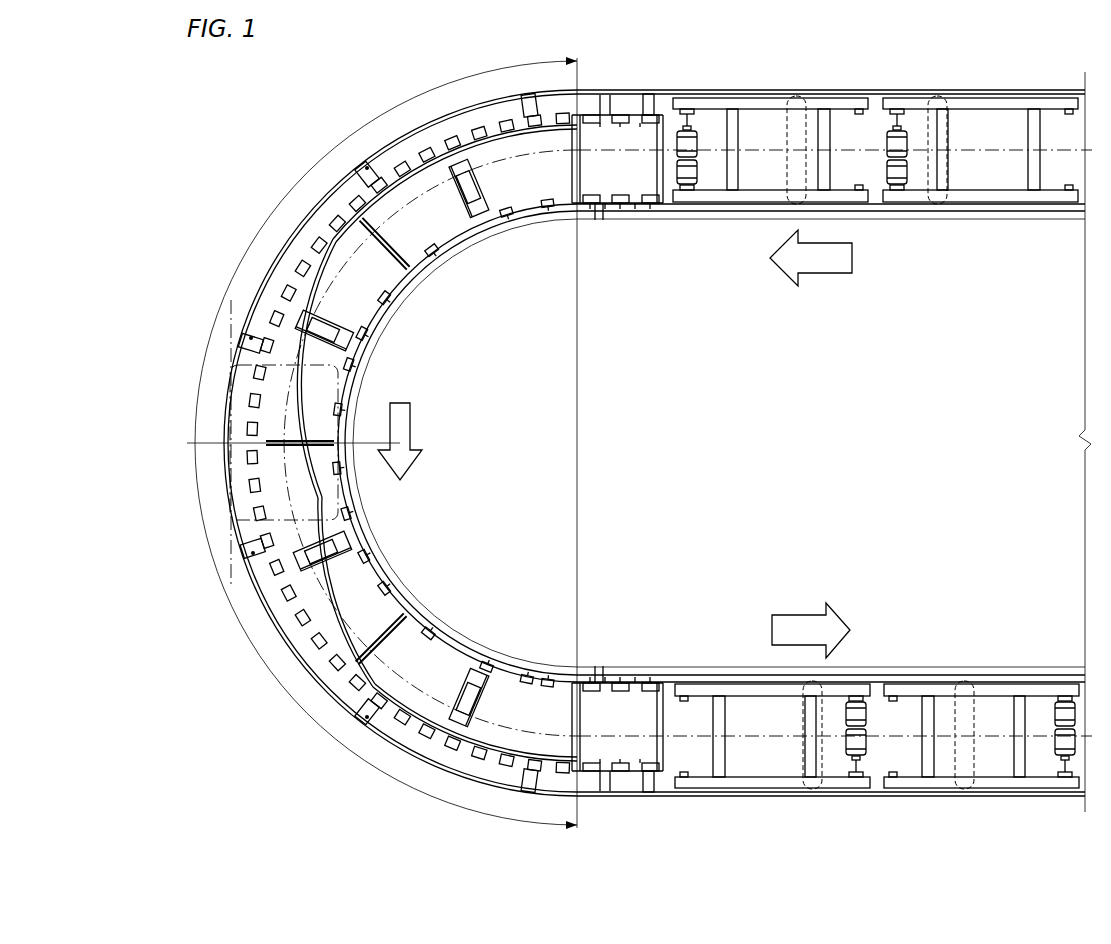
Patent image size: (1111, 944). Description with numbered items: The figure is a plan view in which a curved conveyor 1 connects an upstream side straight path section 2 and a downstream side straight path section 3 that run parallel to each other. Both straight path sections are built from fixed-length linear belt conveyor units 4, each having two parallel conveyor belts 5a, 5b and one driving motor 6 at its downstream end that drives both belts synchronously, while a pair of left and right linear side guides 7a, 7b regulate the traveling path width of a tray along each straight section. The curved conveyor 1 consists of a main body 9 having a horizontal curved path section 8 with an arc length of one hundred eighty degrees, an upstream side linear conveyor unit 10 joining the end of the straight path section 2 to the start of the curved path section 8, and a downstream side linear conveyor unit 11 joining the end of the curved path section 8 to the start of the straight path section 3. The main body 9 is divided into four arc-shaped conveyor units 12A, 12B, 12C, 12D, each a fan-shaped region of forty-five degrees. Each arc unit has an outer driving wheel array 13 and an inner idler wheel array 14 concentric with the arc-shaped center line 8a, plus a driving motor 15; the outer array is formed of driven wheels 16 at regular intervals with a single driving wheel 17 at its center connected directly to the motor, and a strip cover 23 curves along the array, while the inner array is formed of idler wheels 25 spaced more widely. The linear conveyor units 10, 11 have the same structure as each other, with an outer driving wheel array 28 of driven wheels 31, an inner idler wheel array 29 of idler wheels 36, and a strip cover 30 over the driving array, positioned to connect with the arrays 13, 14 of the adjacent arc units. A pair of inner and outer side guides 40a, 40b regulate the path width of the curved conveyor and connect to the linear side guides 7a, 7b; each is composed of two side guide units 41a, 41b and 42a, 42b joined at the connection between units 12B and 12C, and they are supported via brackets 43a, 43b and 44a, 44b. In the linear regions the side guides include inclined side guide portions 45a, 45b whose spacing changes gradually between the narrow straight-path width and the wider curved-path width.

The curved conveyor 1 is at (208, 511).
The upstream side straight path section 2 is at (996, 217).
The downstream side straight path section 3 is at (998, 676).
The linear belt conveyor unit 4 is at (753, 90).
The conveyor belt 5a is at (778, 104).
The conveyor belt 5b is at (733, 203).
The driving motor 6 is at (692, 153).
The linear side guide 7a is at (955, 93).
The linear side guide 7b is at (1023, 213).
The horizontal curved path section 8 is at (340, 202).
The arc-shaped center line 8a is at (501, 443).
The main body 9 is at (236, 381).
The upstream side linear conveyor unit 10 is at (613, 213).
The downstream side linear conveyor unit 11 is at (622, 667).
The arc-shaped conveyor unit 12A is at (418, 158).
The arc-shaped conveyor unit 12B is at (240, 328).
The arc-shaped conveyor unit 12C is at (292, 598).
The arc-shaped conveyor unit 12D is at (515, 752).
The outer driving wheel array 13 is at (413, 157).
The inner idler wheel array 14 is at (423, 253).
The driving motor 15 is at (470, 183).
The driven wheel 16 is at (496, 112).
The driving wheel 17 is at (258, 335).
The strip cover 23 is at (387, 177).
The idler wheel 25 is at (452, 228).
The outer driving wheel array 28 is at (640, 113).
The inner idler wheel array 29 is at (627, 214).
The strip cover 30 is at (668, 122).
The driven wheel 31 is at (626, 114).
The idler wheel 36 is at (632, 200).
The side guide 40a is at (214, 407).
The side guide 40b is at (400, 576).
The side guide unit 41a is at (290, 232).
The side guide unit 41b is at (305, 688).
The side guide unit 42a is at (402, 297).
The side guide unit 42b is at (430, 627).
The bracket 43a is at (530, 92).
The bracket 43b is at (243, 545).
The bracket 44a is at (510, 214).
The bracket 44b is at (370, 513).
The inclined side guide portion 45a is at (607, 113).
The inclined side guide portion 45b is at (600, 213).